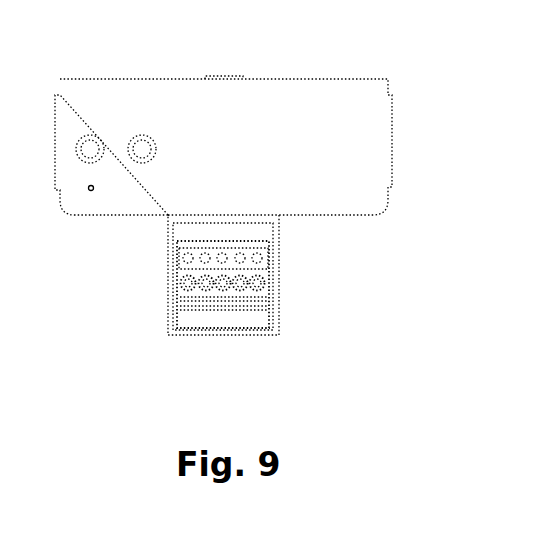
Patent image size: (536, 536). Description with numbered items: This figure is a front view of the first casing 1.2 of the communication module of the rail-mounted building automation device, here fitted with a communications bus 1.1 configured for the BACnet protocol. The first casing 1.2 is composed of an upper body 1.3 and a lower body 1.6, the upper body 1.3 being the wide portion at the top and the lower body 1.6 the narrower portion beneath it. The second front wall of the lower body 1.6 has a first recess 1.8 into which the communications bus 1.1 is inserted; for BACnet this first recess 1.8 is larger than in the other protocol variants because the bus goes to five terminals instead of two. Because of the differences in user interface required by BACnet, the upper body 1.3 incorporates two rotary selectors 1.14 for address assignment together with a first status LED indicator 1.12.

The communications bus 1.1 is at (208, 290).
The first casing 1.2 is at (115, 329).
The upper body 1.3 is at (372, 132).
The lower body 1.6 is at (275, 282).
The first recess 1.8 is at (232, 318).
The first status LED indicator 1.12 is at (90, 191).
The rotary selectors 1.14 is at (142, 141).